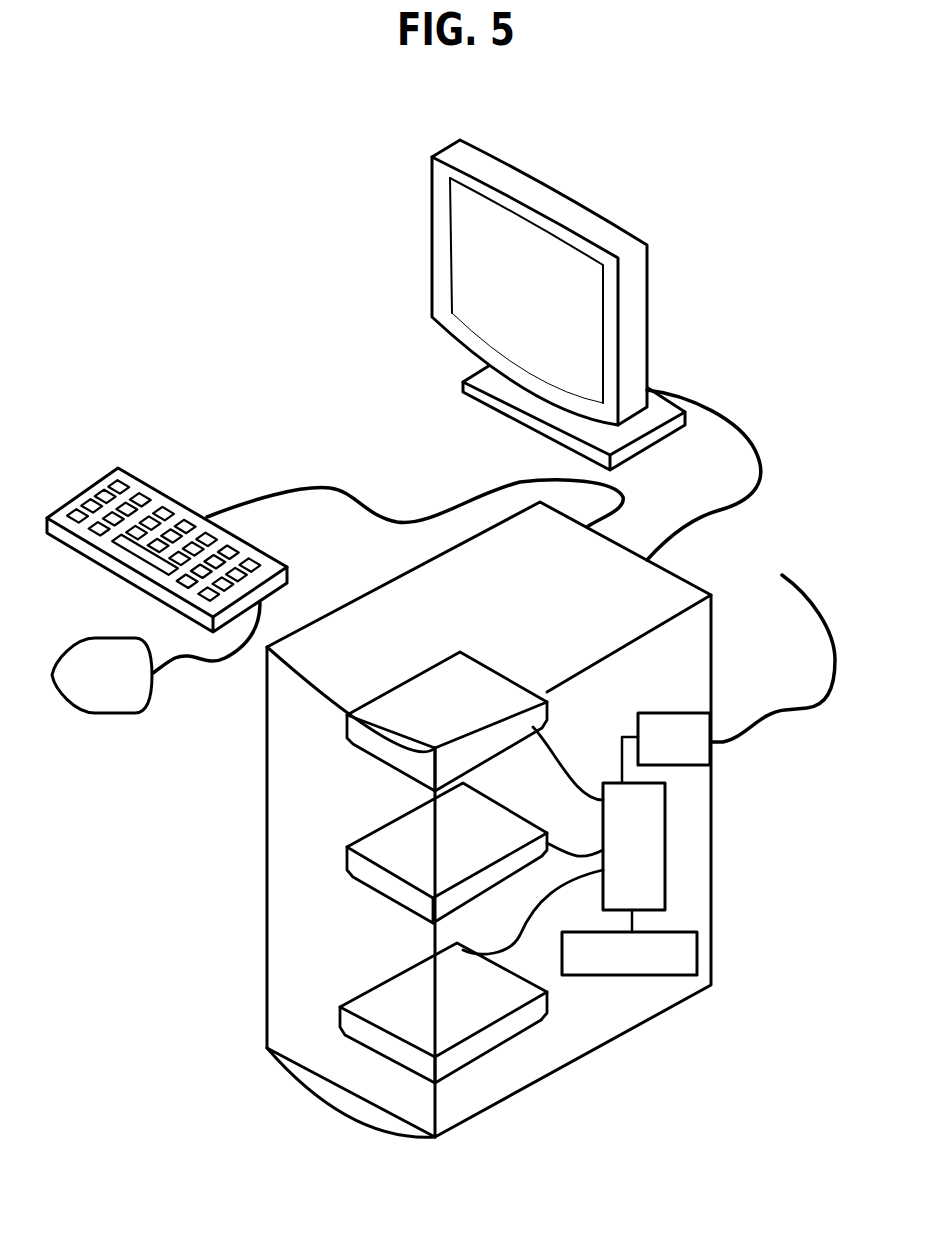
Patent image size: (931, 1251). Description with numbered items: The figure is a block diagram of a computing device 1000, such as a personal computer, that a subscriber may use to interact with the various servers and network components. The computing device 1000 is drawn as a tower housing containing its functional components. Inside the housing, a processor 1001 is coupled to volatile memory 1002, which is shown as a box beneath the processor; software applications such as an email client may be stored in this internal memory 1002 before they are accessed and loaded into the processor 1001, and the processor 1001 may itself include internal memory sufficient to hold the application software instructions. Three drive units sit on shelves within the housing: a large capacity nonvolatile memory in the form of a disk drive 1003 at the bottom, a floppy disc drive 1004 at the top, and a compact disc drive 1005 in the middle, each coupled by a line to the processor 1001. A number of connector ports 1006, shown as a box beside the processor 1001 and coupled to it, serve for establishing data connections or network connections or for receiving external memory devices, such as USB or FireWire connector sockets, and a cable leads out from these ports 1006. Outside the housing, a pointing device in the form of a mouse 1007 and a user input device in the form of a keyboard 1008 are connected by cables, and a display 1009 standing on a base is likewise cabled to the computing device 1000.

The computing device 1000 is at (711, 620).
The processor 1001 is at (656, 860).
The volatile memory 1002 is at (652, 965).
The disk drive 1003 is at (547, 1008).
The floppy disc drive 1004 is at (547, 710).
The compact disc (CD) drive 1005 is at (497, 890).
The connector ports 1006 is at (697, 751).
The mouse 1007 is at (102, 715).
The keyboard 1008 is at (287, 570).
The display 1009 is at (647, 322).